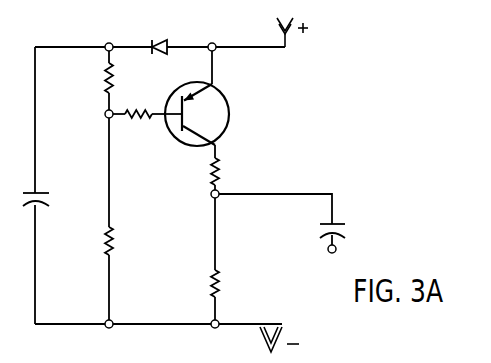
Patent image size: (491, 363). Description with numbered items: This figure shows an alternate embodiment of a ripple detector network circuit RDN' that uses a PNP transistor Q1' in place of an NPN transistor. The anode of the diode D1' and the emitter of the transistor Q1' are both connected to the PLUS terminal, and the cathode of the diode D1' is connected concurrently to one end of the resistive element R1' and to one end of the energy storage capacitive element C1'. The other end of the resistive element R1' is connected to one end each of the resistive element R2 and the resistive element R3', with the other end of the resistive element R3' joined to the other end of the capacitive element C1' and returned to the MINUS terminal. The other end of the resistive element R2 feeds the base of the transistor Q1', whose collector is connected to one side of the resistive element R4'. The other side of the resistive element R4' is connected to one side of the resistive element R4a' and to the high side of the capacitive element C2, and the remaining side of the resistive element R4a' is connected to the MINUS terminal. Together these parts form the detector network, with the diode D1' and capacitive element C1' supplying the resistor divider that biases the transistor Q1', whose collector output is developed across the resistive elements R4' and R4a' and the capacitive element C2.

The diode D1' is at (179, 34).
The resistive element R1' is at (95, 73).
The resistive element R2 is at (136, 118).
The resistive element R3' is at (125, 234).
The resistive element R4' is at (234, 167).
The resistive element R4a' is at (235, 276).
The PNP transistor Q1' is at (213, 114).
The energy storage capacitive element C1' is at (47, 184).
The capacitive element C2 is at (342, 227).
The PLUS terminal PLUS is at (285, 47).
The MINUS terminal MINUS is at (272, 330).
The ripple detector network circuit RDN' is at (301, 122).